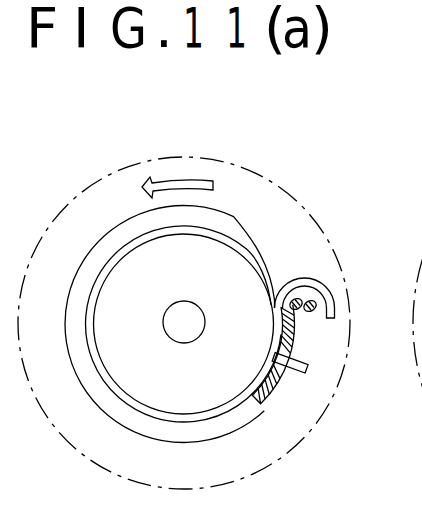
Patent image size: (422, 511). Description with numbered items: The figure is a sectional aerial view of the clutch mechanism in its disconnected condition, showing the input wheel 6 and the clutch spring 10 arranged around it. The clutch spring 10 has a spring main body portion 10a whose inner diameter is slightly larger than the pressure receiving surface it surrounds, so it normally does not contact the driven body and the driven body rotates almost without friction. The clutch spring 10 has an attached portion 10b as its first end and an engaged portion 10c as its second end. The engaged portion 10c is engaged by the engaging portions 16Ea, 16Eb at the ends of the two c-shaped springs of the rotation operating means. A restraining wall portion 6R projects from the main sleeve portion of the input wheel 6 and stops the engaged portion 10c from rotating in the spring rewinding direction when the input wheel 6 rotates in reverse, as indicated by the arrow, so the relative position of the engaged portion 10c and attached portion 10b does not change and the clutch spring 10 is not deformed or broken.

The input wheel 6 is at (72, 283).
The restraining wall portion 6R is at (279, 325).
The clutch spring 10 is at (87, 340).
The spring main body portion 10a is at (152, 413).
The attached portion 10b is at (300, 374).
The engaged portion 10c is at (297, 300).
The engaging portion 16Ea is at (303, 300).
The engaging portion 16Eb is at (323, 320).